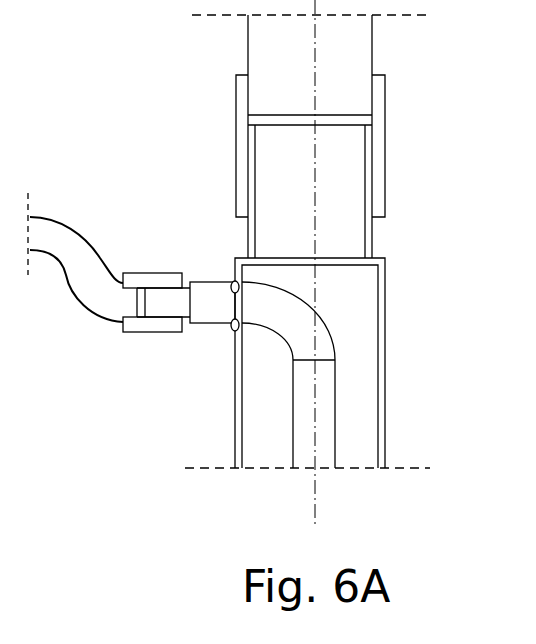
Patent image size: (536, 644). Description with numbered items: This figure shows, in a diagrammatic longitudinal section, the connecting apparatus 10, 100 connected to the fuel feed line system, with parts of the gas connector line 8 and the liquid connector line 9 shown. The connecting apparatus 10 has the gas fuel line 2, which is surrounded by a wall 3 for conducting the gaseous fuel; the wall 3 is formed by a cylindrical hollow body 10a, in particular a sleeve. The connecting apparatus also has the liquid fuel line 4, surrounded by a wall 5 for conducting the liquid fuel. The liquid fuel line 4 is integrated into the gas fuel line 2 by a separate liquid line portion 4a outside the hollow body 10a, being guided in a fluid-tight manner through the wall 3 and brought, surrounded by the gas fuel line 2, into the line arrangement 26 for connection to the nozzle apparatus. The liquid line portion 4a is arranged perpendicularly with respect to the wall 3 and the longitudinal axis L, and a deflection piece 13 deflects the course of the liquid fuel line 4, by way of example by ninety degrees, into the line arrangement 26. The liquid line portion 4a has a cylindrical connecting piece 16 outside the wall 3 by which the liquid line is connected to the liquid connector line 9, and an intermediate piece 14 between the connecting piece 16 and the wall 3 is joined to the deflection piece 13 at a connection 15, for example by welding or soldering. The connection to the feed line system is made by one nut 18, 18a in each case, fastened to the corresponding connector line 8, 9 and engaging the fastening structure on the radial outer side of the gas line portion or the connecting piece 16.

The gas fuel line 2 is at (353, 150).
The wall 3 is at (364, 363).
The liquid fuel line 4 is at (300, 405).
The separate liquid line portion 4a is at (126, 249).
The wall 5 is at (335, 405).
The gas connector line 8 is at (360, 50).
The liquid connector line 9 is at (70, 238).
The connecting apparatus 10 is at (253, 146).
The connection arrangement 100 is at (253, 142).
The cylindrical hollow body 10a is at (388, 265).
The deflection piece 13 is at (360, 330).
The intermediate piece 14 is at (205, 282).
The connection 15 is at (233, 331).
The connecting piece 16 is at (160, 273).
The nut 18 is at (385, 102).
The nut 18a is at (163, 333).
The line arrangement 26 is at (265, 474).
The longitudinal axis L is at (316, 493).